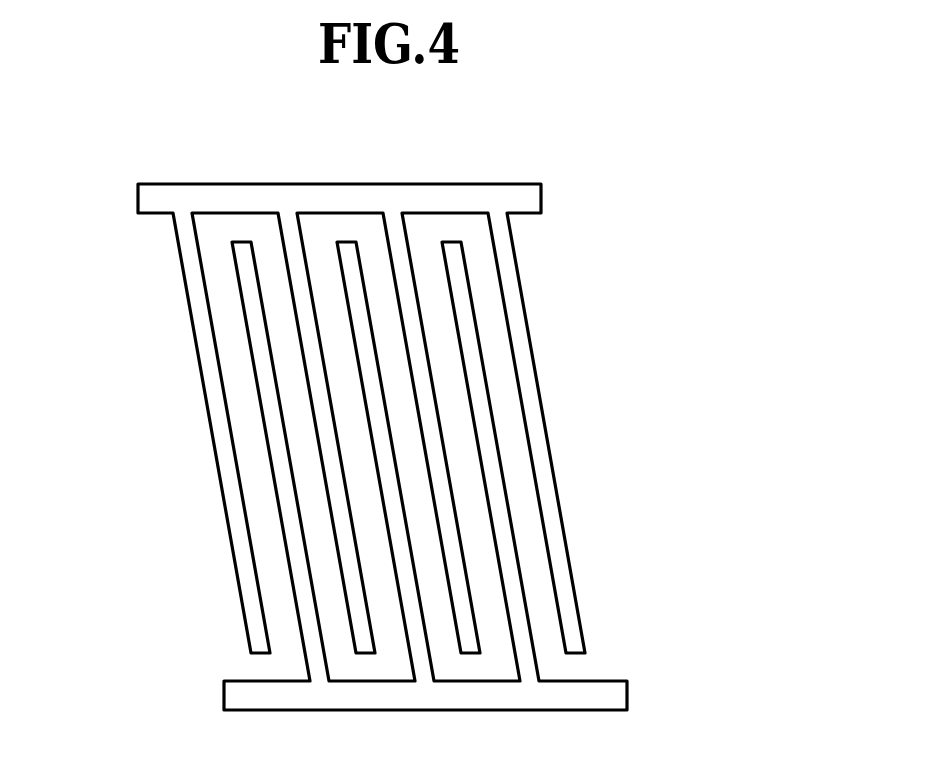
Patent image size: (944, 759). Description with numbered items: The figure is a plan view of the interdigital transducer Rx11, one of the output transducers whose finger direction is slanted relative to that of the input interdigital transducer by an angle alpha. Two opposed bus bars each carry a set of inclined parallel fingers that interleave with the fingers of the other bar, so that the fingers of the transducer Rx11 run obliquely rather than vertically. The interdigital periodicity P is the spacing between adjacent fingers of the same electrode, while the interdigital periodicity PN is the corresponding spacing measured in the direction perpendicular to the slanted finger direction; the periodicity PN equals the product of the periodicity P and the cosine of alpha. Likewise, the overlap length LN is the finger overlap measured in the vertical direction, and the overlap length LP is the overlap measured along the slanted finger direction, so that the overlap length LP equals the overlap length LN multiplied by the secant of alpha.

The interdigital transducer Rx11 is at (410, 418).
The interdigital periodicity P is at (257, 115).
The interdigital periodicity along the direction vertical to the finger direction PN is at (254, 139).
The overlap length LN is at (225, 653).
The overlap length along the finger direction LP is at (80, 243).